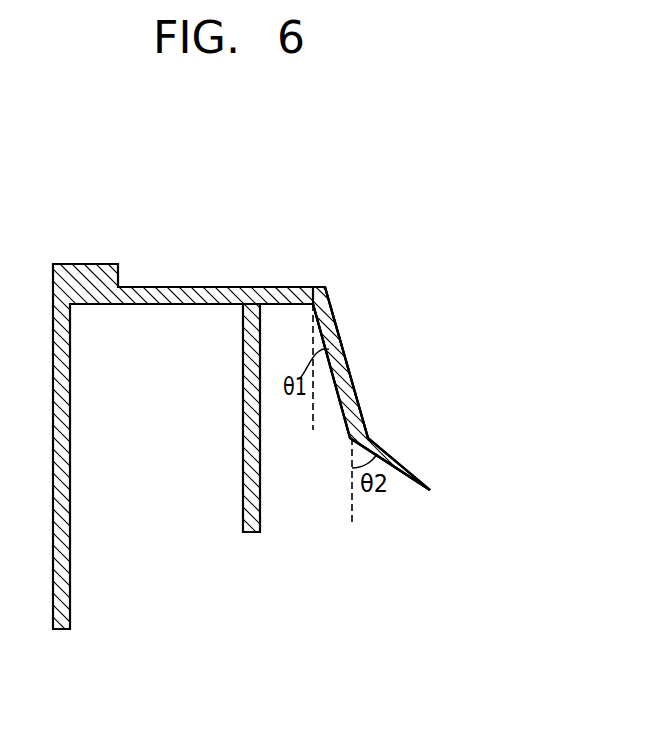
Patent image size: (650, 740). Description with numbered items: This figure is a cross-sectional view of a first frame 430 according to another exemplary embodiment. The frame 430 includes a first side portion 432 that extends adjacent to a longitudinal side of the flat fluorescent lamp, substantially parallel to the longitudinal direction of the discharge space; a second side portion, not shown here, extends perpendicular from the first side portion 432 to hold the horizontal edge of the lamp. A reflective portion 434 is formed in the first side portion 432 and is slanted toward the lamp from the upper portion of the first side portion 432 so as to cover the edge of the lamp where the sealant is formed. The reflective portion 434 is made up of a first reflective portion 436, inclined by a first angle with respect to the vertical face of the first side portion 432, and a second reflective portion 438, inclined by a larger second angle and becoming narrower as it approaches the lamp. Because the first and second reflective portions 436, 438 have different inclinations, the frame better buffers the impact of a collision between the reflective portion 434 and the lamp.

The frame 430 is at (330, 268).
The first side portion 432 is at (157, 292).
The reflective portion 434 is at (497, 373).
The first reflective portion 436 is at (346, 384).
The second reflective portion 438 is at (374, 440).